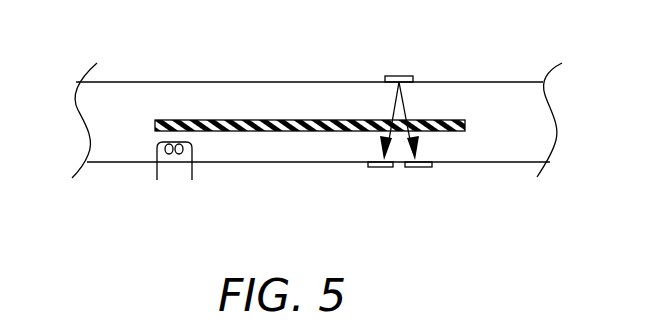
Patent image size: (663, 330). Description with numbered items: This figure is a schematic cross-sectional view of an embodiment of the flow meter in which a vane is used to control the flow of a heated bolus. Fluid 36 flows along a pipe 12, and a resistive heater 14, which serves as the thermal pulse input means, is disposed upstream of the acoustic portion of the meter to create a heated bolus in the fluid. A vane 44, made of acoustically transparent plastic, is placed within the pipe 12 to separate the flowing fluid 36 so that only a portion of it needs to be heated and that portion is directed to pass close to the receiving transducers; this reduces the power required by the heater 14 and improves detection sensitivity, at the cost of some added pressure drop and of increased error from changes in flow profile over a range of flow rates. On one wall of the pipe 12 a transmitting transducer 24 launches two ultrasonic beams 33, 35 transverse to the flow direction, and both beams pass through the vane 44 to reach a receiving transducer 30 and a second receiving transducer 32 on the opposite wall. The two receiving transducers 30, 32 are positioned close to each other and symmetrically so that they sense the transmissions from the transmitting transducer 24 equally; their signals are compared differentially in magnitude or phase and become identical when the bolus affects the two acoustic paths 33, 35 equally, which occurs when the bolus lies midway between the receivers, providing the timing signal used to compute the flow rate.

The pipe 12 is at (140, 82).
The fluid 36 is at (221, 93).
The vane 44 is at (268, 121).
The resistive heater 14 is at (192, 150).
The transmitting transducer 24 is at (405, 76).
The acoustic beam 33 is at (393, 101).
The acoustic path 35 is at (405, 100).
The receiving transducer 30 is at (378, 167).
The second receiving transducer 32 is at (412, 167).